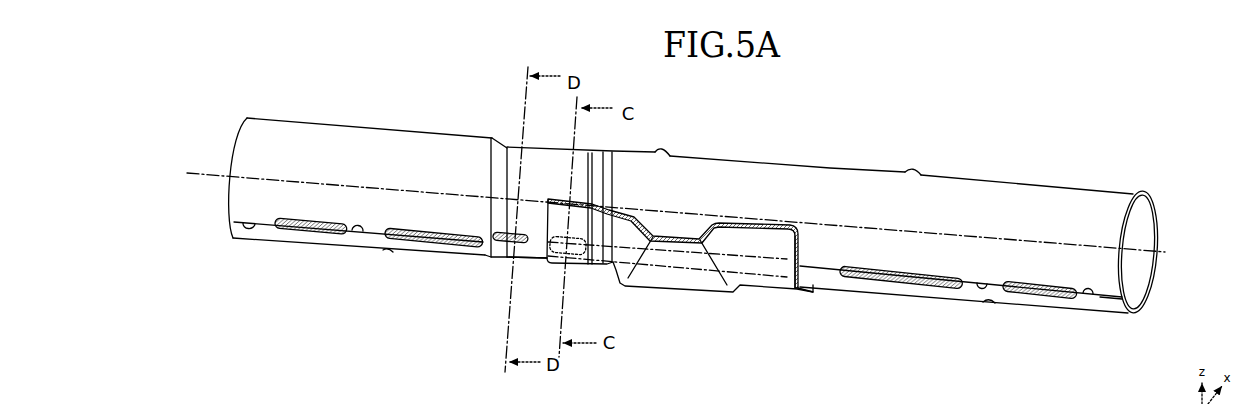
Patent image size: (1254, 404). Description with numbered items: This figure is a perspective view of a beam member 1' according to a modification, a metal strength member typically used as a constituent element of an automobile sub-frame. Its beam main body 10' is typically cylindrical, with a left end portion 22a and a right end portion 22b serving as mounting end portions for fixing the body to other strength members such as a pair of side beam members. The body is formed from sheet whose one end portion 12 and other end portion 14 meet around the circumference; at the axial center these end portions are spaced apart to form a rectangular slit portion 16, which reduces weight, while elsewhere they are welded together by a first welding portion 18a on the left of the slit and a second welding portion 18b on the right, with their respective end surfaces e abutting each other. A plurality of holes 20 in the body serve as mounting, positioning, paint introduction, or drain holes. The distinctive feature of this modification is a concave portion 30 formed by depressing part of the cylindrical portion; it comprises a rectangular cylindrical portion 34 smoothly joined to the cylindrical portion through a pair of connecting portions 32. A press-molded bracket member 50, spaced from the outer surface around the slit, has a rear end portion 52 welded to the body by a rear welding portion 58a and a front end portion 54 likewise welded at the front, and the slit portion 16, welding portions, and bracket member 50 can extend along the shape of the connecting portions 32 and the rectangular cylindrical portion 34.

The beam member 1' is at (692, 189).
The beam main body 10' is at (692, 219).
The one end portion 12 is at (1093, 278).
The other end portion 14 is at (1100, 302).
The slit portion 16 is at (755, 270).
The first welding portion 18a is at (297, 237).
The second welding portion 18b is at (853, 277).
The holes 20 is at (913, 172).
The left end portion 22a is at (238, 143).
The right end portion 22b is at (1103, 220).
The concave portion 30 is at (545, 270).
The connecting portions 32 is at (490, 225).
The rectangular cylindrical portion 34 is at (550, 177).
The bracket member 50 is at (597, 280).
The rear end portion 52 is at (787, 243).
The front end portion 54 is at (813, 294).
The rear welding portion 58a is at (630, 203).
The end surfaces e is at (240, 222).